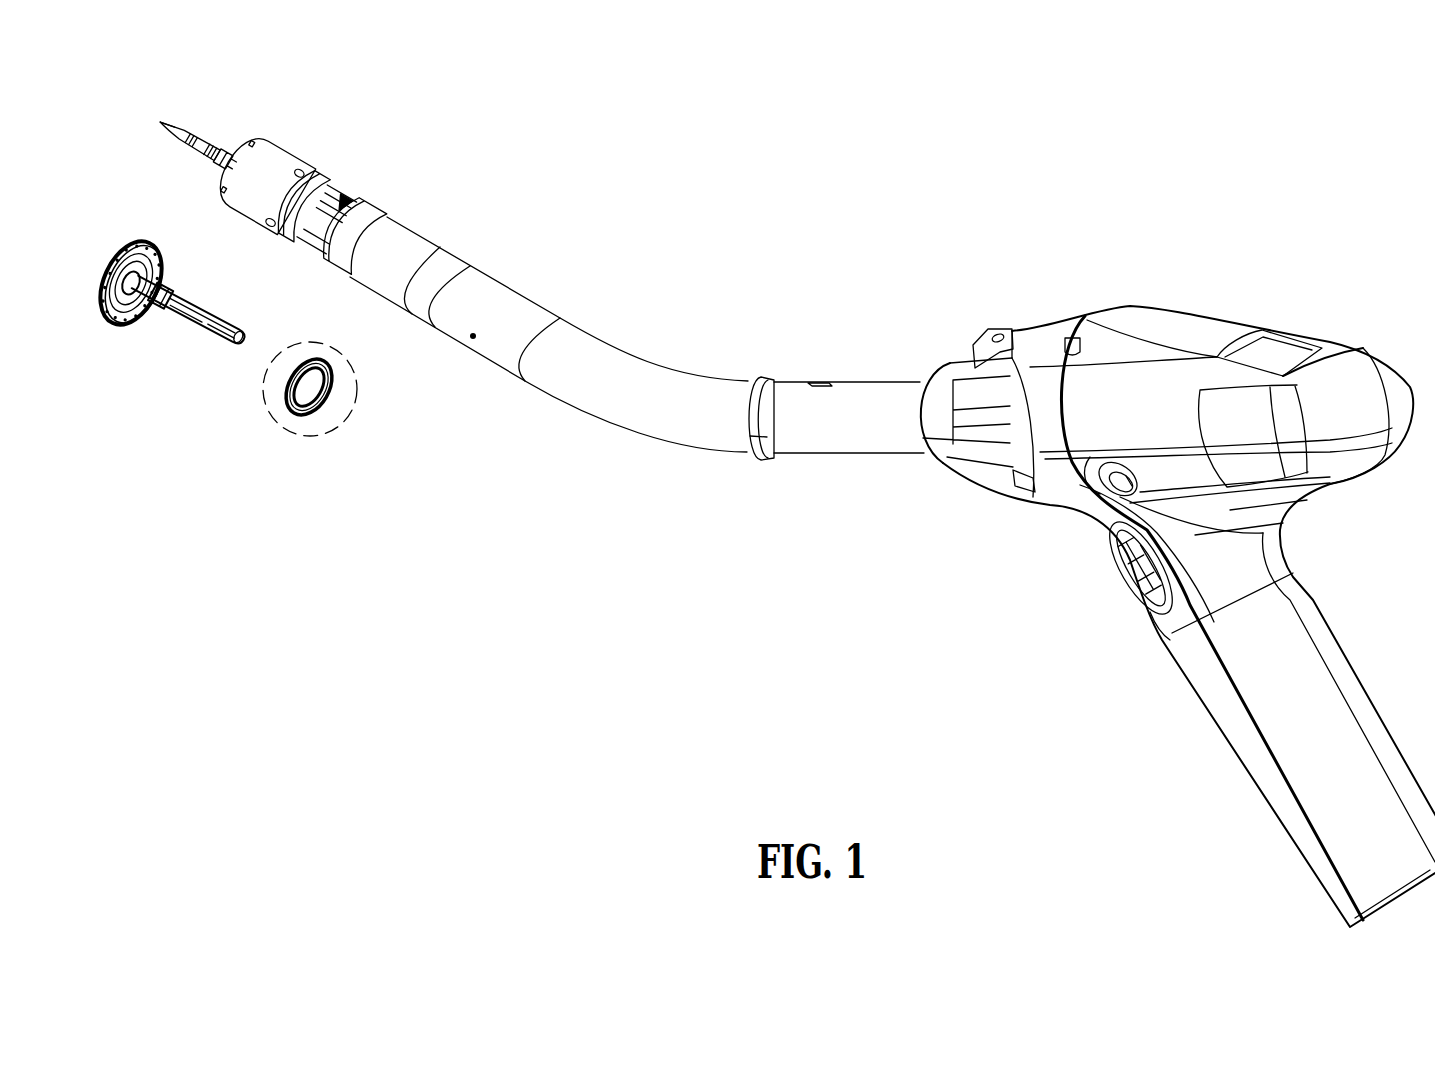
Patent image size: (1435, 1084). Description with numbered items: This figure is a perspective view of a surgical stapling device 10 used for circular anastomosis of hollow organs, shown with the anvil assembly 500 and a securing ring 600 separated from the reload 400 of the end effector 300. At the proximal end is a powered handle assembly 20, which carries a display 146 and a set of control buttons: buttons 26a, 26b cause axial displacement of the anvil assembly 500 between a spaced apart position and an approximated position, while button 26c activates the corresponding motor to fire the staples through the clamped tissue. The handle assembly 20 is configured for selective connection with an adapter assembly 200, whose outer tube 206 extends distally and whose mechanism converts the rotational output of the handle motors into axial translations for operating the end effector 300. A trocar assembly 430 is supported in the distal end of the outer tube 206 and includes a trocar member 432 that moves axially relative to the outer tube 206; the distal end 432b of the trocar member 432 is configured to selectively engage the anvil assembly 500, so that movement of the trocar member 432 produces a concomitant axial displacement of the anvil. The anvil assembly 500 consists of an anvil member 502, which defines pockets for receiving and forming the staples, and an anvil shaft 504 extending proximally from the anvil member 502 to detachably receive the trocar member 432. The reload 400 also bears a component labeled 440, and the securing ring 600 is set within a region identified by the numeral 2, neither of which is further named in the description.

The surgical stapling device 10 is at (937, 184).
The handle assembly 20 is at (1318, 574).
The button 26a is at (1128, 556).
The button 26b is at (1152, 625).
The button 26c is at (1090, 490).
The display 146 is at (1297, 343).
The adapter assembly 200 is at (711, 372).
The outer tube 206 is at (427, 250).
The end effector 300 is at (483, 472).
The reload 400 is at (262, 232).
The trocar assembly 430 is at (224, 155).
The trocar member 432 is at (190, 150).
The distal end 432b is at (160, 122).
The housing sleeve 440 is at (258, 140).
The anvil assembly 500 is at (160, 305).
The anvil member 502 is at (108, 322).
The anvil shaft 504 is at (216, 338).
The securing ring 600 is at (317, 413).
The FIG. 2 detail region 2 is at (272, 418).